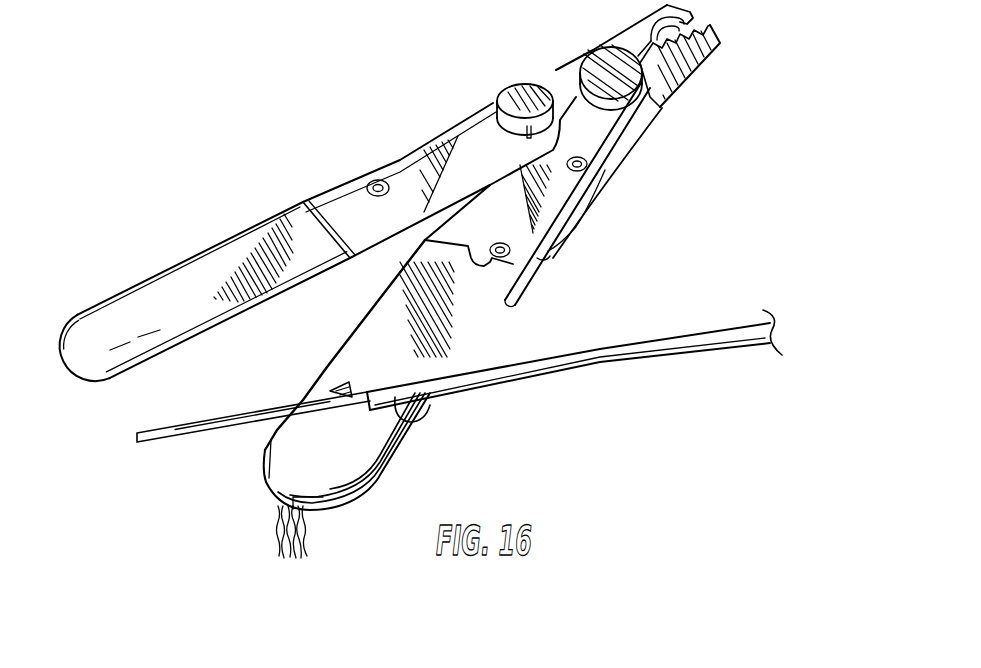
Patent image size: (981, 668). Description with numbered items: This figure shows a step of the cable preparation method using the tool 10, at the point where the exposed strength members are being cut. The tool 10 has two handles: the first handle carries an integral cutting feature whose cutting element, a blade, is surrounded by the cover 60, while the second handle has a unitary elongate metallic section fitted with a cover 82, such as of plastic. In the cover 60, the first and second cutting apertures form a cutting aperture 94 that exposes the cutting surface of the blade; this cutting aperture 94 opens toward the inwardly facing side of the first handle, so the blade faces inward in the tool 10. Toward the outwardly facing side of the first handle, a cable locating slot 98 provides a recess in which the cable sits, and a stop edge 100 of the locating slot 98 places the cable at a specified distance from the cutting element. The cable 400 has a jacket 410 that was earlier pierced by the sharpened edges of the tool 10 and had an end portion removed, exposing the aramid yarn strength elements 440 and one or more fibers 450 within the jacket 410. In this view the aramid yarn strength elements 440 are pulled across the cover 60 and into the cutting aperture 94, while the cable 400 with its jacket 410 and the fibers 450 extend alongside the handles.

The tool 10 is at (216, 92).
The cover 82 is at (231, 258).
The cover 60 is at (478, 300).
The stop edge 100 is at (352, 384).
The cable locating slot 98 is at (416, 418).
The cutting aperture 94 is at (285, 407).
The fibers 450 is at (165, 433).
The jacket 410 is at (507, 365).
The cable 400 is at (745, 330).
The aramid yarn strength elements 440 is at (305, 537).